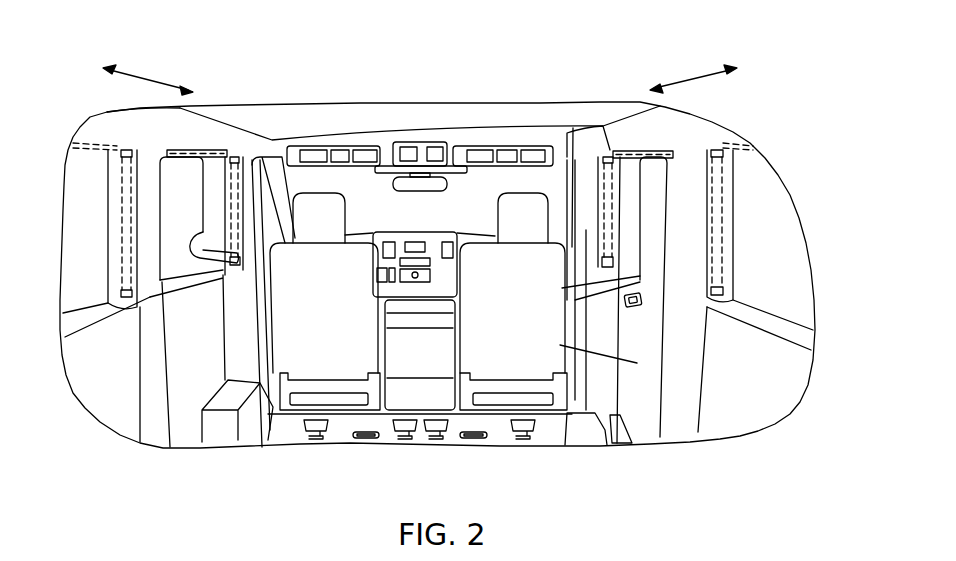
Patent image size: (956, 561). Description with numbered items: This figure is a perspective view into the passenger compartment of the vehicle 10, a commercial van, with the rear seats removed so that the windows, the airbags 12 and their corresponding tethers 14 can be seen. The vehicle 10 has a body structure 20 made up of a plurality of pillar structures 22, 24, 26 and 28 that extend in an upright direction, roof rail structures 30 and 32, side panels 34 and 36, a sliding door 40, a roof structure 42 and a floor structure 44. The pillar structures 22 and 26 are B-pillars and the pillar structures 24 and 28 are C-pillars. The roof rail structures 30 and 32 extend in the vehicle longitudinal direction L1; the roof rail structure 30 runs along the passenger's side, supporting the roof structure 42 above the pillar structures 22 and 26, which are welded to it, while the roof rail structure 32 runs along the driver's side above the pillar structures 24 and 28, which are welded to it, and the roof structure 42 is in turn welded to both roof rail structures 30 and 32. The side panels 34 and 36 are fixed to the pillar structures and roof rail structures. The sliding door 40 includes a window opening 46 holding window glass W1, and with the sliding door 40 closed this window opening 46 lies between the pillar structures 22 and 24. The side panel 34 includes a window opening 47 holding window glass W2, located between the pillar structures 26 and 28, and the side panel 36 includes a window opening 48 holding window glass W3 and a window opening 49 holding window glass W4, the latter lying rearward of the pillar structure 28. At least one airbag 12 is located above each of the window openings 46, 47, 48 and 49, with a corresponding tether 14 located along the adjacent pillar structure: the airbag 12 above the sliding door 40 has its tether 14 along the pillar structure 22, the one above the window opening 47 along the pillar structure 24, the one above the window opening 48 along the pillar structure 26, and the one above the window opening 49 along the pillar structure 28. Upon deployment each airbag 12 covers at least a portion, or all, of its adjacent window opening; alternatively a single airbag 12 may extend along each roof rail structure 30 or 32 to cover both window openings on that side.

The vehicle 10 is at (317, 48).
The airbag 12 is at (190, 143).
The tether 14 is at (122, 247).
The body structure 20 is at (437, 98).
The pillar structure 22 is at (570, 182).
The pillar structure 24 is at (680, 330).
The pillar structure 26 is at (247, 188).
The pillar structure 28 is at (150, 242).
The roof rail structure 30 is at (627, 133).
The roof rail structure 32 is at (217, 137).
The side panel 34 is at (748, 400).
The side panel 36 is at (183, 430).
The sliding door 40 is at (590, 350).
The roof structure 42 is at (336, 128).
The floor structure 44 is at (285, 428).
The window opening 46 is at (640, 190).
The window opening 47 is at (733, 194).
The window opening 48 is at (237, 263).
The window opening 49 is at (107, 220).
The vehicle longitudinal direction L1 is at (148, 80).
The window glass W1 is at (573, 295).
The window glass W2 is at (783, 297).
The window glass W3 is at (180, 263).
The window glass W4 is at (83, 287).